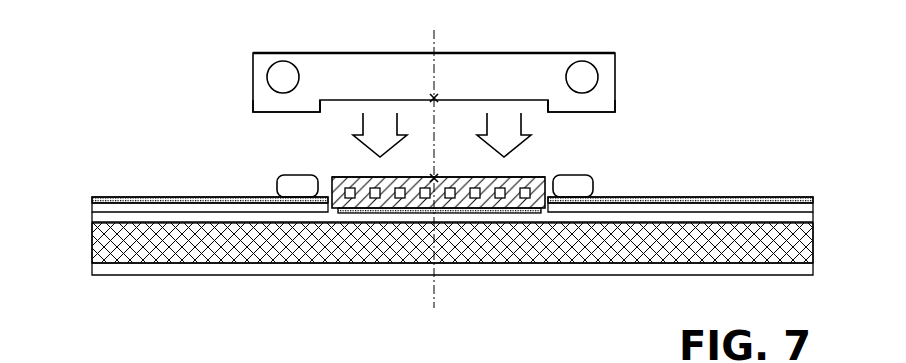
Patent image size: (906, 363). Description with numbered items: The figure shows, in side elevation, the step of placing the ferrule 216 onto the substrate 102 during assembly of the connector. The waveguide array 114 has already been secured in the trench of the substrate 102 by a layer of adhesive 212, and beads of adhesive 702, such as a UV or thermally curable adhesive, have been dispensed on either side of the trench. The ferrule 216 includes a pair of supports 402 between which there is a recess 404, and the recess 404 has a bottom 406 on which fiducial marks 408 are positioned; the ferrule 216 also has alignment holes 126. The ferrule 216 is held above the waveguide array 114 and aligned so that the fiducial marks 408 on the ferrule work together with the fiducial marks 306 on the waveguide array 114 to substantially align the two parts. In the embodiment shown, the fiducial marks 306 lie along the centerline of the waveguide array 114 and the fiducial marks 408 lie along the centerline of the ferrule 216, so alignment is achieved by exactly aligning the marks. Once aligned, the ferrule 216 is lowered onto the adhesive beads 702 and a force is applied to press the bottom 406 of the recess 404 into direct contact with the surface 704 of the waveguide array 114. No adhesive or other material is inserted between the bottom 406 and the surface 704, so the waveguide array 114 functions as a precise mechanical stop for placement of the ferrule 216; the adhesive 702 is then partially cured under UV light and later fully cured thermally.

The substrate 102 is at (87, 197).
The waveguide array 114 is at (362, 204).
The alignment holes 126 is at (598, 70).
The adhesive 212 is at (518, 210).
The ferrule 216 is at (506, 70).
The fiducial marks 306 is at (436, 177).
The supports 402 is at (253, 103).
The recess 404 is at (340, 101).
The bottom 406 is at (540, 101).
The fiducial marks 408 is at (436, 97).
The beads of adhesive 702 is at (282, 183).
The surface 704 is at (522, 177).